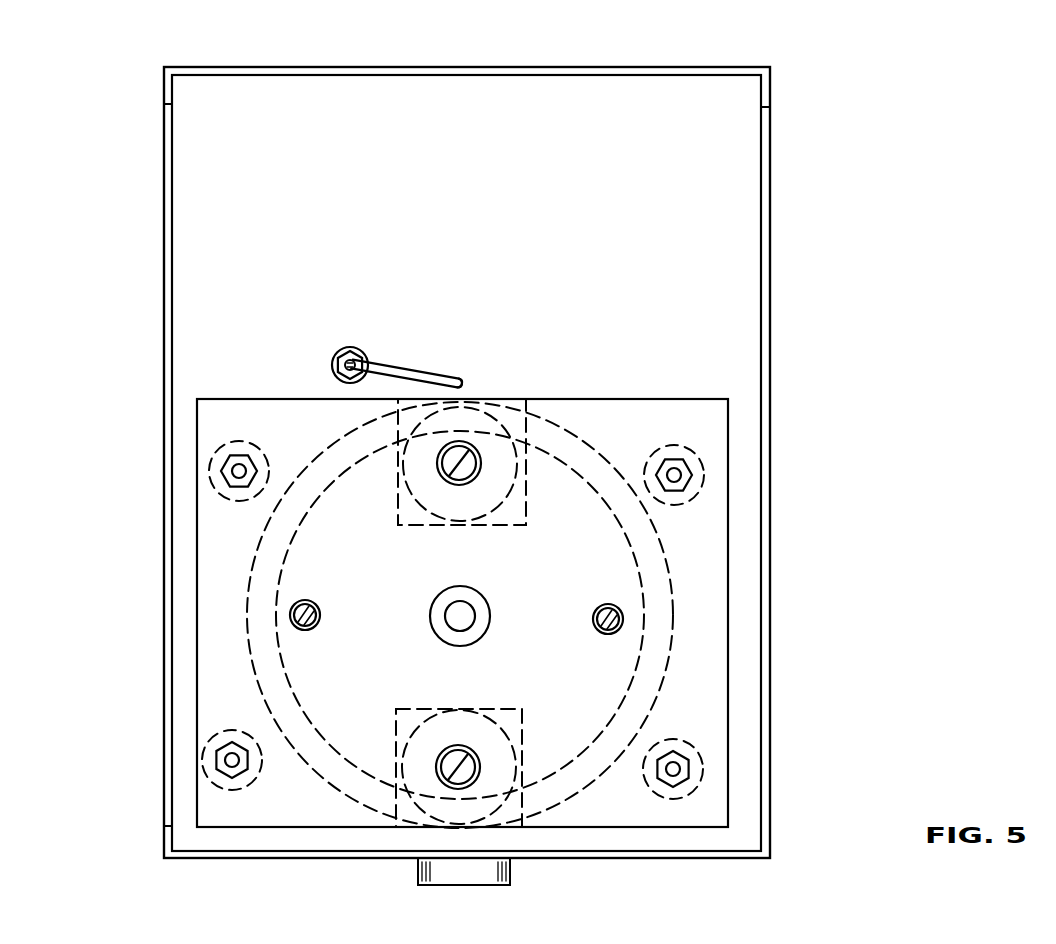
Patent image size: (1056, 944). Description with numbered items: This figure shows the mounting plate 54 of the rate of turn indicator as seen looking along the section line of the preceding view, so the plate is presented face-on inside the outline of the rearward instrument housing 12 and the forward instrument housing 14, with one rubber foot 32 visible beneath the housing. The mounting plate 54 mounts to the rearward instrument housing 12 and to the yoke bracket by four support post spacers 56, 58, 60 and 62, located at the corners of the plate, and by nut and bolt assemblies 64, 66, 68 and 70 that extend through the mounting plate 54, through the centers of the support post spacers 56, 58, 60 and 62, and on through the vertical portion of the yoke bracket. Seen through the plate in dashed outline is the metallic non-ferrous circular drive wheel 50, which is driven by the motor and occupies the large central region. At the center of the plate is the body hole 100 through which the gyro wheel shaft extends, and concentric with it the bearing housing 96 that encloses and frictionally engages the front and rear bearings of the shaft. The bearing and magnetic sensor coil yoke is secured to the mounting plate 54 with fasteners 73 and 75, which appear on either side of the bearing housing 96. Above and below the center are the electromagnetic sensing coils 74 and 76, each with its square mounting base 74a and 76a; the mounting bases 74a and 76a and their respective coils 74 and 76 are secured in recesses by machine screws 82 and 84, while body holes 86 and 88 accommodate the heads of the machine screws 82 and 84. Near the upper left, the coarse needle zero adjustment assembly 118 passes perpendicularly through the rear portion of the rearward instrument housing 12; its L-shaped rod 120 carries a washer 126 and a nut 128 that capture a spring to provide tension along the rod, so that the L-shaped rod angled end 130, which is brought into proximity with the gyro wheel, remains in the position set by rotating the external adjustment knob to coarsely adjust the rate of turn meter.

The rearward instrument housing 12 is at (673, 67).
The forward instrument housing 14 is at (741, 208).
The rubber foot 32 is at (510, 873).
The circular drive wheel 50 is at (643, 572).
The mounting plate 54 is at (706, 415).
The support post spacer 56 is at (210, 470).
The support post spacer 58 is at (708, 476).
The support post spacer 60 is at (205, 760).
The support post spacer 62 is at (705, 771).
The nut and bolt assembly 64 is at (225, 463).
The nut and bolt assembly 66 is at (690, 470).
The nut and bolt assembly 68 is at (218, 752).
The nut and bolt assembly 70 is at (690, 760).
The fastener 73 is at (307, 603).
The fastener 75 is at (597, 630).
The electromagnetic sensing coil 74 is at (497, 417).
The square mounting base 74a is at (527, 460).
The electromagnetic sensing coil 76 is at (507, 737).
The square mounting base 76a is at (523, 746).
The machine screw 82 is at (467, 468).
The machine screw 84 is at (470, 757).
The body hole 86 is at (455, 480).
The body hole 88 is at (450, 746).
The bearing housing 96 is at (462, 616).
The body hole 100 is at (478, 600).
The coarse needle zero adjustment assembly 118 is at (367, 321).
The L-shaped rod 120 is at (405, 370).
The washer 126 is at (337, 352).
The nut 128 is at (348, 366).
The L-shaped rod angled end 130 is at (447, 382).